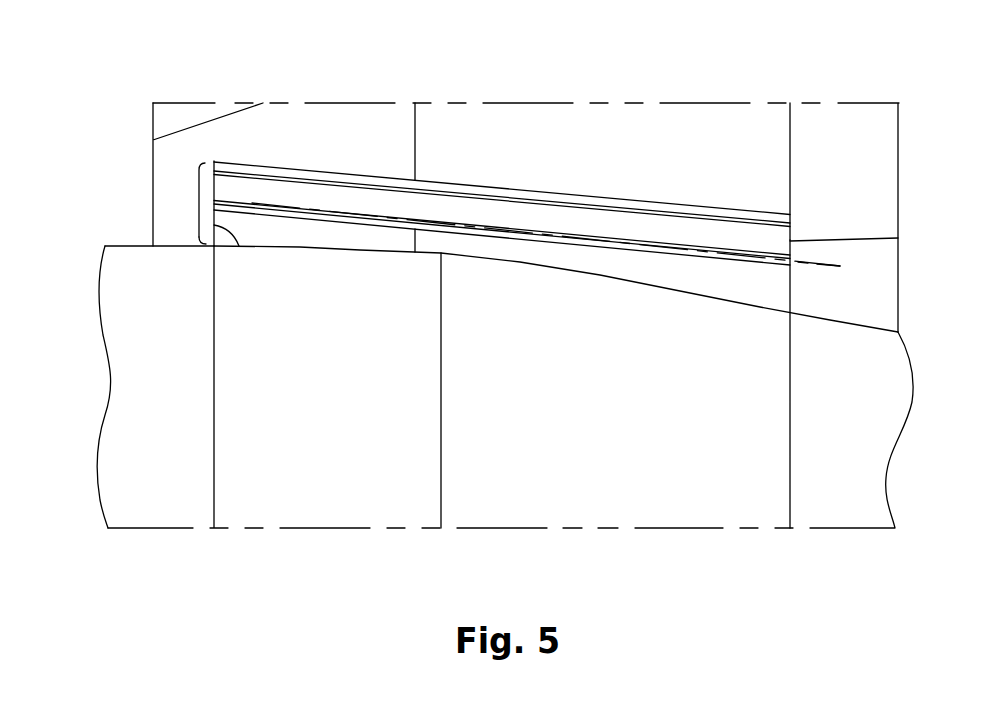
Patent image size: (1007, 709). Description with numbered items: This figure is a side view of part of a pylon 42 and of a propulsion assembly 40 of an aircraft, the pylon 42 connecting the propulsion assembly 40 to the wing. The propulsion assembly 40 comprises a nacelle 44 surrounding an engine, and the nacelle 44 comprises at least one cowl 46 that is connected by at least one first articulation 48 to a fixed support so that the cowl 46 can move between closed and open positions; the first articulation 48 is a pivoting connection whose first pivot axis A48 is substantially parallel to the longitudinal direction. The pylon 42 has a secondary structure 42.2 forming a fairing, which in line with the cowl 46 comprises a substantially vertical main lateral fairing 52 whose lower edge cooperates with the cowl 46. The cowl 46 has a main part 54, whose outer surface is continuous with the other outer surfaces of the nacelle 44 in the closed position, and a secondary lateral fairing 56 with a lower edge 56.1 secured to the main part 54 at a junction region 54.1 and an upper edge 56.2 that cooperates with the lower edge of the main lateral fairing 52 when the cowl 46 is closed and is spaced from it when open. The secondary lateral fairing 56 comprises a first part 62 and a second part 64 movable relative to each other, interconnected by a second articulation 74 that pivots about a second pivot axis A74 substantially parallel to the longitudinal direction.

The propulsion assembly 40 is at (86, 240).
The pylon 42 is at (838, 120).
The secondary structure 42.2 is at (722, 118).
The nacelle 44 is at (140, 436).
The cowl 46 is at (618, 493).
The first articulation 48 is at (858, 260).
The first pivot axis A48 is at (833, 268).
The main lateral fairing 52 is at (366, 180).
The main part 54 is at (765, 402).
The support face 54.1 is at (196, 226).
The secondary lateral fairing 56 is at (196, 204).
The lower edge 56.1 is at (199, 238).
The upper edge 56.2 is at (228, 162).
The first part 62 is at (772, 303).
The second part 64 is at (783, 240).
The second articulation 74 is at (240, 203).
The second pivot axis A74 is at (293, 207).